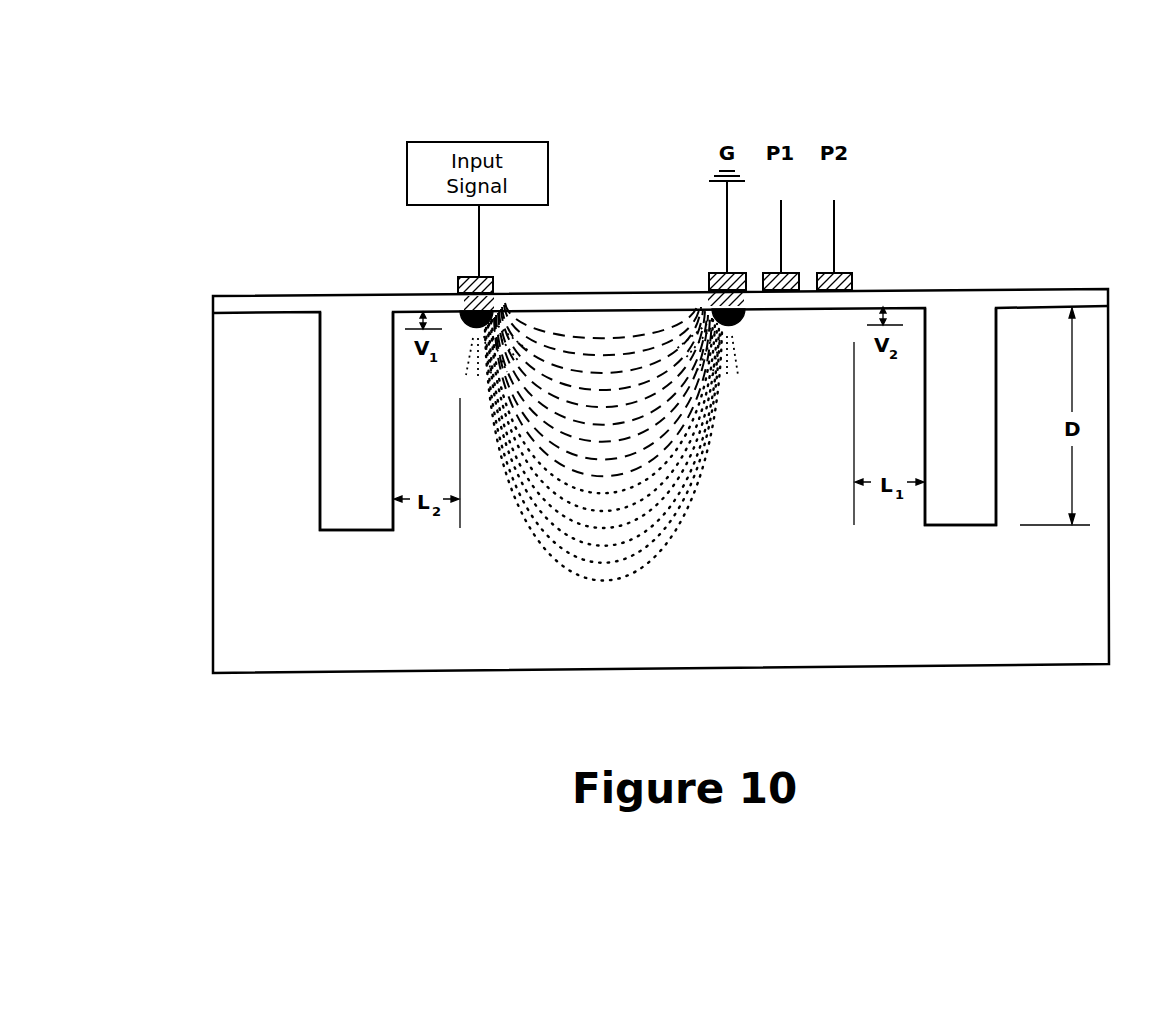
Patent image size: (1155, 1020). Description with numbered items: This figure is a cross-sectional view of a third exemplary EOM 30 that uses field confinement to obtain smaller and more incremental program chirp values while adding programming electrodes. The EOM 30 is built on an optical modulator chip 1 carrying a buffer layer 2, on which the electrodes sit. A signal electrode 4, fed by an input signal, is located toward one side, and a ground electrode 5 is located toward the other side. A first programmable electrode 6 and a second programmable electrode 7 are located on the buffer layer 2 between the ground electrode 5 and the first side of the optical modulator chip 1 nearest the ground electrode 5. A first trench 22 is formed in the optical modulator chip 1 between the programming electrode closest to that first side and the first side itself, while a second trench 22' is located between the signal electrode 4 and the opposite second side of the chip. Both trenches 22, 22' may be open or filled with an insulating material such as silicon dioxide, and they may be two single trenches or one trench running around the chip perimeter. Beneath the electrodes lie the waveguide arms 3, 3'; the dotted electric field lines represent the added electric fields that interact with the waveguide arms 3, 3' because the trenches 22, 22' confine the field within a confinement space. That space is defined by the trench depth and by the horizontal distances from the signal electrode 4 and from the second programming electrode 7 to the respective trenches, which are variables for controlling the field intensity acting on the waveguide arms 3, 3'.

The optical modulator chip 1 is at (237, 452).
The buffer layer 2 is at (1074, 291).
The waveguide arm 3 is at (478, 353).
The waveguide arm 3' is at (739, 343).
The signal electrode 4 is at (467, 277).
The ground electrode 5 is at (720, 275).
The first programmable electrode 6 is at (773, 273).
The second programmable electrode 7 is at (824, 273).
The first trench 22 is at (984, 416).
The second trench 22' is at (320, 421).
The EOM 30 is at (360, 222).